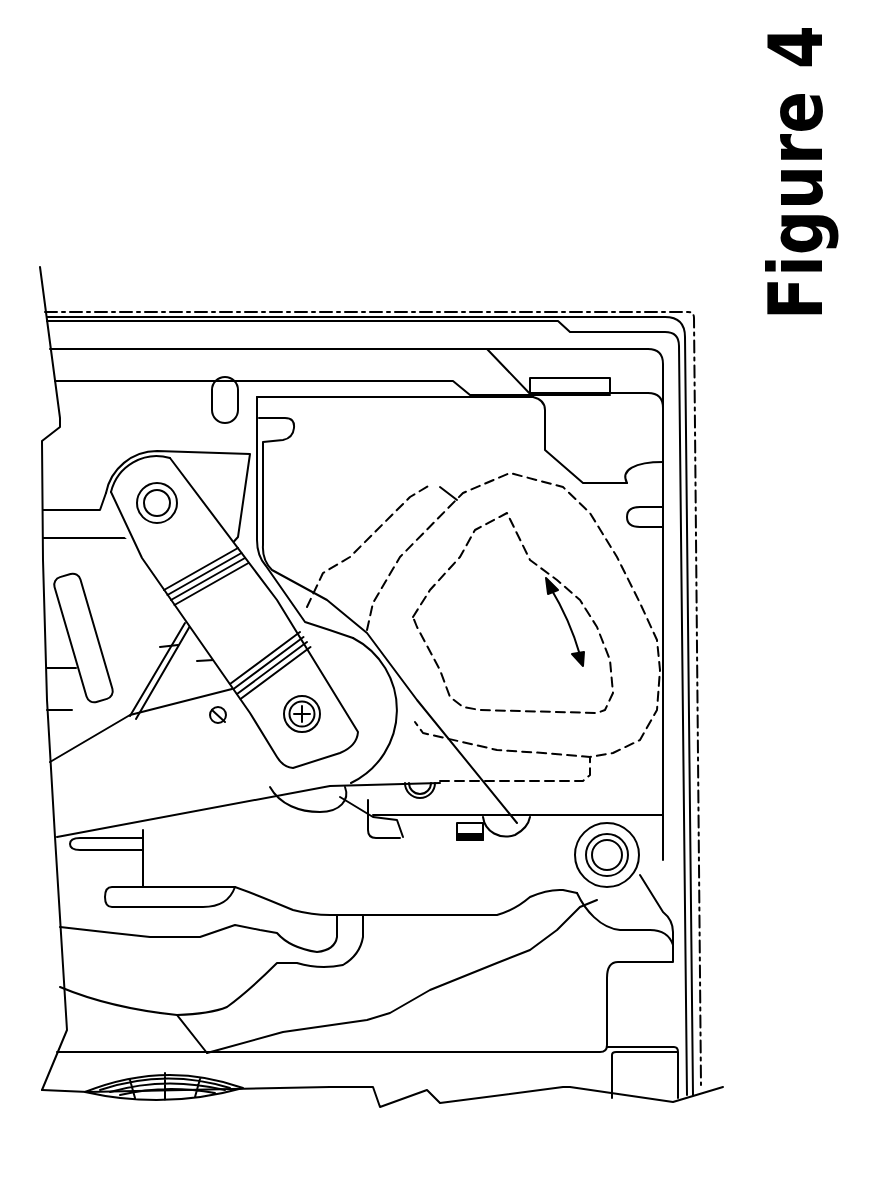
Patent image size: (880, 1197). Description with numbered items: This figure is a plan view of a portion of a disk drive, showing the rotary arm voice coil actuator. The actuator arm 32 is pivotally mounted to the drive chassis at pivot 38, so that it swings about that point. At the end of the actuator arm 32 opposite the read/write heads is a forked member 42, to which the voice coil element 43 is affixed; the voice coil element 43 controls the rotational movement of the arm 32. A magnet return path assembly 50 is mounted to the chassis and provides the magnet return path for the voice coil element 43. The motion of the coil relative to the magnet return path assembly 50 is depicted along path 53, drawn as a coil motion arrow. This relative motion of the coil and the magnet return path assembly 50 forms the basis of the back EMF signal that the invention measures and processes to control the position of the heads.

The actuator arm 32 is at (108, 713).
The pivot 38 is at (290, 737).
The forked member 42 is at (410, 760).
The voice coil element 43 is at (506, 698).
The magnet return path assembly 50 is at (660, 835).
The coil motion path 53 is at (575, 620).